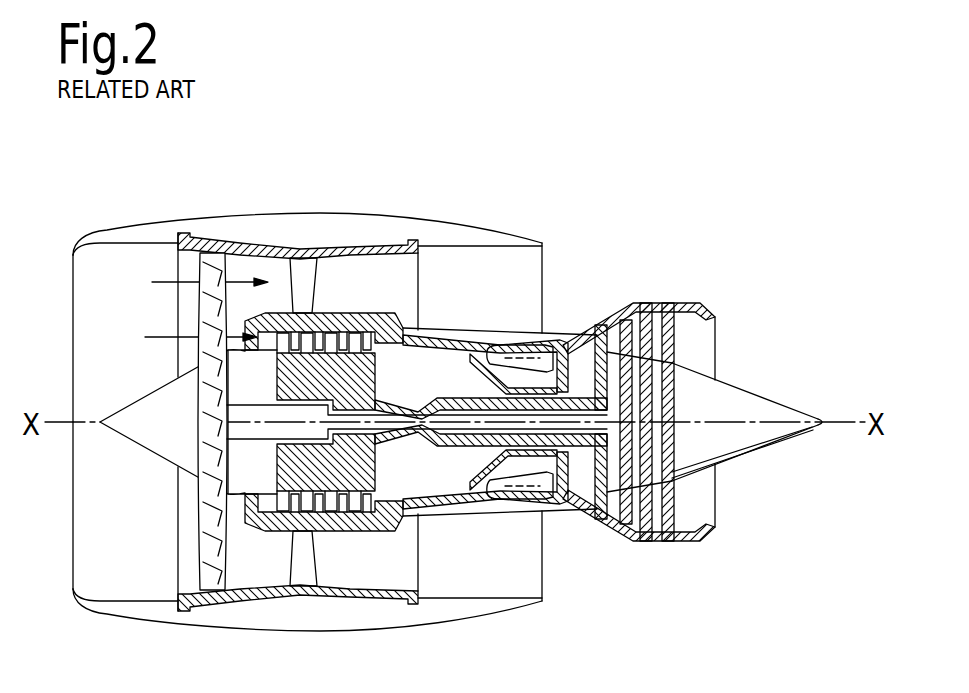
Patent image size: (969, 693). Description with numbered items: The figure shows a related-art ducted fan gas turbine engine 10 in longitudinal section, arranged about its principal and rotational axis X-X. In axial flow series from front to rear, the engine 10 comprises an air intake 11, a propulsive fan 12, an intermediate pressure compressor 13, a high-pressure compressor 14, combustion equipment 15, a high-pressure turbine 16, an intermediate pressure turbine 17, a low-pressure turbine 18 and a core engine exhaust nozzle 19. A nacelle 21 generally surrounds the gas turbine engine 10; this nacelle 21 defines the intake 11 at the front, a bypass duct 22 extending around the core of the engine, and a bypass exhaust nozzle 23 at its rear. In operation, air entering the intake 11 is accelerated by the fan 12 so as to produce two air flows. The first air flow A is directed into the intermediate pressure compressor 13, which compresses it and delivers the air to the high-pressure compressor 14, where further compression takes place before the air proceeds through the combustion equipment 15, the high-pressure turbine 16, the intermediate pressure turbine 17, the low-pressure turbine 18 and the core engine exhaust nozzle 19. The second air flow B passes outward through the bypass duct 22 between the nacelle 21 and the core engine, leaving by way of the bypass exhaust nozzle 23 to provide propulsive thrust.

The ducted fan gas turbine engine 10 is at (145, 192).
The air intake 11 is at (117, 257).
The propulsive fan 12 is at (207, 548).
The intermediate pressure compressor 13 is at (336, 500).
The high-pressure compressor 14 is at (452, 345).
The combustion equipment 15 is at (500, 496).
The high-pressure turbine 16 is at (562, 504).
The intermediate pressure turbine 17 is at (597, 328).
The low-pressure turbine 18 is at (617, 531).
The core engine exhaust nozzle 19 is at (707, 302).
The nacelle 21 is at (266, 227).
The bypass duct 22 is at (510, 289).
The bypass exhaust nozzle 23 is at (544, 243).
The first air flow A is at (192, 337).
The second air flow B is at (200, 283).